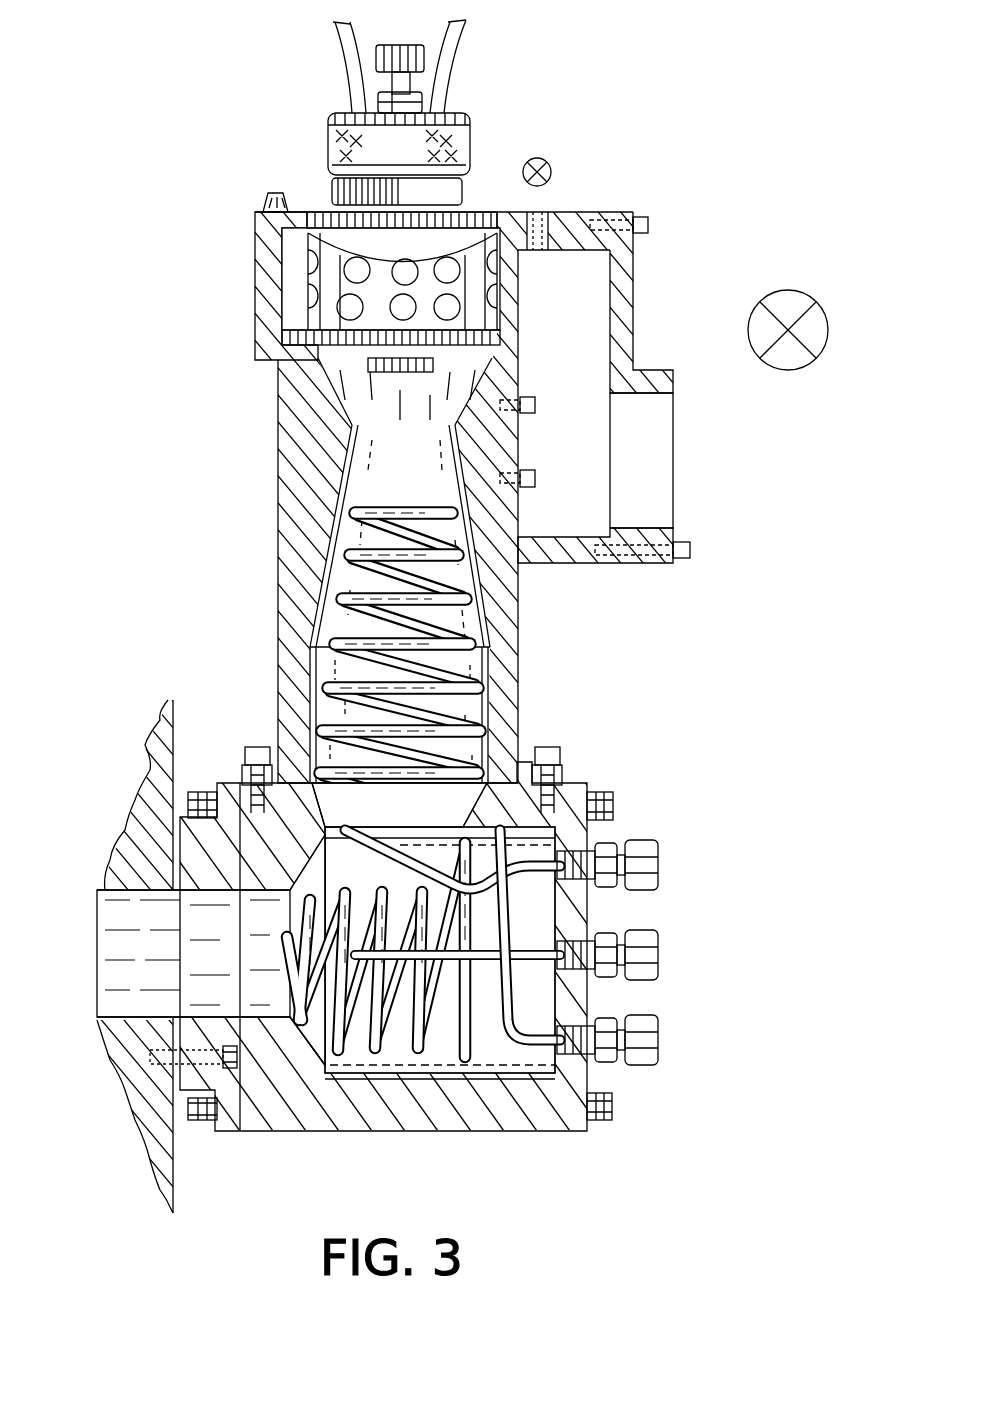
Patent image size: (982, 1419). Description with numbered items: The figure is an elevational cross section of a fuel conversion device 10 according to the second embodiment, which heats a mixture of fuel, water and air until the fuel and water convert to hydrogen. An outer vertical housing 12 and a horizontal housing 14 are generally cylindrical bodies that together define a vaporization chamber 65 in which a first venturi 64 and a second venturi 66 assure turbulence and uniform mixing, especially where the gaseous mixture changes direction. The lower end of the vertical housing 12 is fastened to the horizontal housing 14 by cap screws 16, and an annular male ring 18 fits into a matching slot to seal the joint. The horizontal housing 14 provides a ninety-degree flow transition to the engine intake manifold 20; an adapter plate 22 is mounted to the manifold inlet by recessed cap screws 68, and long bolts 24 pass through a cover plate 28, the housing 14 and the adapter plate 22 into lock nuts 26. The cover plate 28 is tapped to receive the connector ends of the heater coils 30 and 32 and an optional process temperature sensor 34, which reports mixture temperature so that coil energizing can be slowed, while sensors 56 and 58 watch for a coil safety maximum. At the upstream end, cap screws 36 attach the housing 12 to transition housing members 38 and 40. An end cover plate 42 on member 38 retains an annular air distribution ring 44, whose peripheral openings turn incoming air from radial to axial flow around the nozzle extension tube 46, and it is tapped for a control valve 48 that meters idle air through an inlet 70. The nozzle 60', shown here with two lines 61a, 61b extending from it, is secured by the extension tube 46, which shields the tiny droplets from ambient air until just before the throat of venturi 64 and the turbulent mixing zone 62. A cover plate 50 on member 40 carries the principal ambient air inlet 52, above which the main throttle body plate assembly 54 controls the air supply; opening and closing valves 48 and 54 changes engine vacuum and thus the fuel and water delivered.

The fuel conversion device 10 is at (258, 515).
The vertical housing 12 is at (540, 630).
The horizontal housing 14 is at (448, 1155).
The cap screws 16 is at (550, 768).
The annular male ring 18 is at (270, 770).
The intake manifold 20 is at (96, 845).
The adapter plate 22 is at (225, 1128).
The long bolts 24 is at (612, 1108).
The lock nuts 26 is at (203, 792).
The cover plate 28 is at (583, 795).
The heater coil 30 is at (405, 512).
The heater coil 32 is at (300, 915).
The process temperature sensor 34 is at (518, 948).
The cap screws 36 is at (272, 200).
The transition housing member 38 is at (255, 268).
The transition housing member 40 is at (566, 566).
The end cover plate 42 is at (572, 240).
The annular air distribution ring 44 is at (497, 308).
The nozzle extension tube 46 is at (462, 225).
The control valve 48 is at (552, 163).
The cover plate 50 is at (690, 325).
The principal ambient air inlet 52 is at (645, 472).
The main throttle body plate assembly 54 is at (818, 358).
The sensor 56 is at (660, 860).
The sensor 58 is at (660, 1040).
The nozzle 60' is at (382, 125).
The tube 61a is at (350, 67).
The tube 61b is at (455, 36).
The turbulent mixing zone 62 is at (416, 456).
The venturi 64 is at (466, 480).
The vaporization chamber 65 is at (470, 658).
The venturi 66 is at (433, 931).
The cap screws 68 is at (236, 1050).
The inlet 70 is at (538, 252).